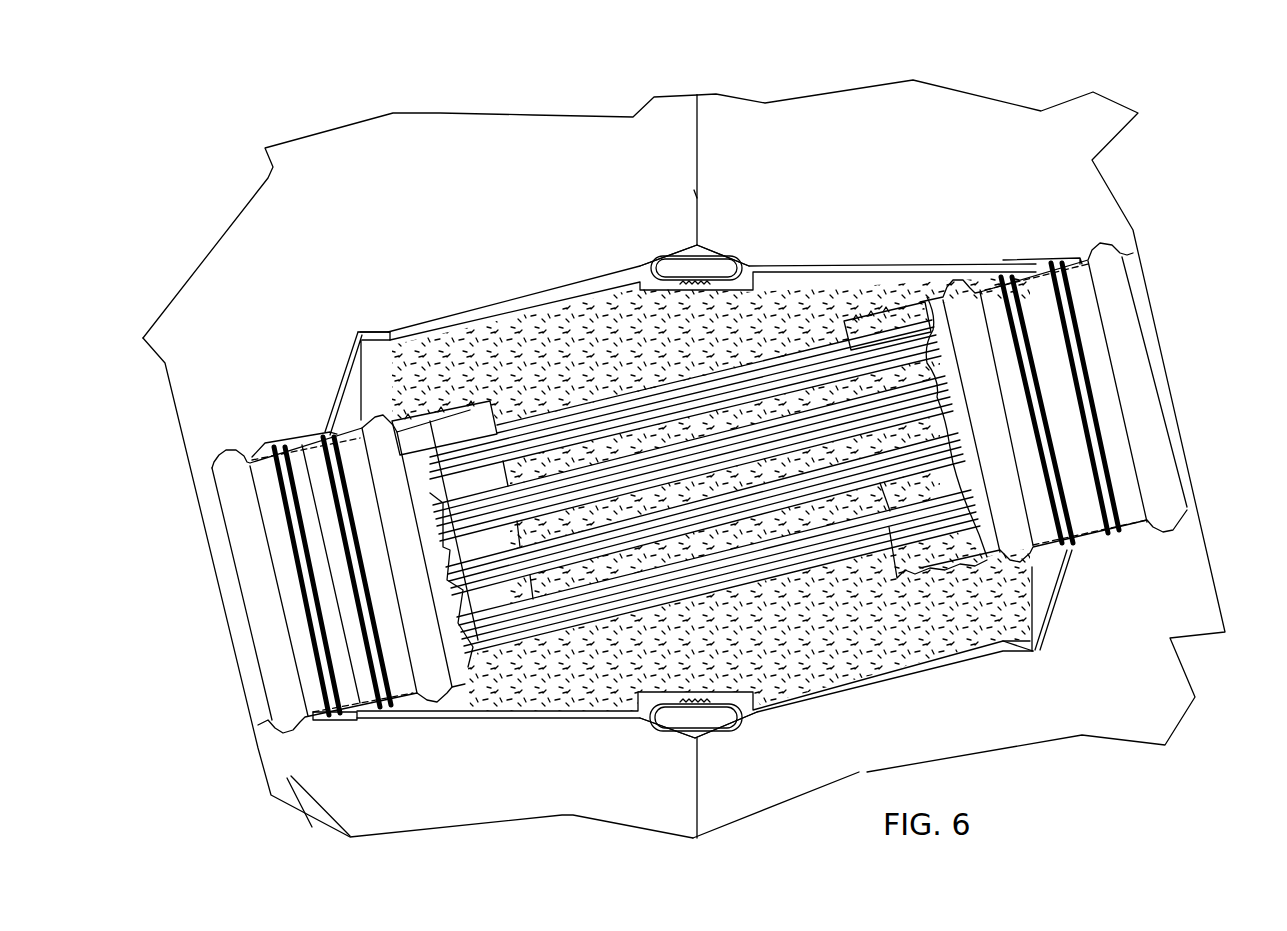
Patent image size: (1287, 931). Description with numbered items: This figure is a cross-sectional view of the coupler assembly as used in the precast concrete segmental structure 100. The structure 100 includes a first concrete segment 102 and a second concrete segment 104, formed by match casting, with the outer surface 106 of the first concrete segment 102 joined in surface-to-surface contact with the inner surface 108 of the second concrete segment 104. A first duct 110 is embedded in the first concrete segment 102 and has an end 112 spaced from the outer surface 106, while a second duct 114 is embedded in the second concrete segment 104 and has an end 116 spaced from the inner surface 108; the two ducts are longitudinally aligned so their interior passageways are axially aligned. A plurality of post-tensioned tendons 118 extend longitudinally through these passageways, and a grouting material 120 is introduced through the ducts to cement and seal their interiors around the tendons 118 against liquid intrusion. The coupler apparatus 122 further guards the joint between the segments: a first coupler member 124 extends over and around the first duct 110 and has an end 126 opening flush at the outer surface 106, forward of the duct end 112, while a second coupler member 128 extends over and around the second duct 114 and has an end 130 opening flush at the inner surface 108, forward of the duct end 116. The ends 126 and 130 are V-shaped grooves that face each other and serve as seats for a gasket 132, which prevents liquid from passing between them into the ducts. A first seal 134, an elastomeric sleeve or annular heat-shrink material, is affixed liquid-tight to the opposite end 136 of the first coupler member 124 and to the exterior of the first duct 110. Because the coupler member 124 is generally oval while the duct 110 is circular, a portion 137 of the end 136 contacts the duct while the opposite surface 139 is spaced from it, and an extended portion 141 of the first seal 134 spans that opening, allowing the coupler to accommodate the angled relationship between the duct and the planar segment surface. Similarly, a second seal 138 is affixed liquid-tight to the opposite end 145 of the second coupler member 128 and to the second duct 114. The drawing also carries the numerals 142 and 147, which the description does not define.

The precast concrete segmental structure 100 is at (757, 62).
The first concrete segment 102 is at (505, 135).
The second concrete segment 104 is at (888, 96).
The outer surface 106 is at (697, 198).
The inner surface 108 is at (702, 160).
The first duct 110 is at (273, 668).
The end 112 is at (534, 671).
The second duct 114 is at (1140, 377).
The end 116 is at (859, 305).
The tendons 118 is at (557, 427).
The grouting material 120 is at (529, 326).
The coupler apparatus 122 is at (684, 495).
The first coupler member 124 is at (572, 719).
The end 126 is at (693, 734).
The second coupler member 128 is at (825, 262).
The end 130 is at (704, 244).
The gasket 132 is at (685, 268).
The first seal 134 is at (340, 383).
The opposite end 136 is at (368, 333).
The portion 137 is at (377, 715).
The second seal 138 is at (1044, 605).
The opposite surface 139 is at (367, 332).
The extended portion 141 is at (327, 420).
The clamp band 142 is at (339, 722).
The opposite end 145 is at (1021, 268).
The foot 147 is at (1054, 577).